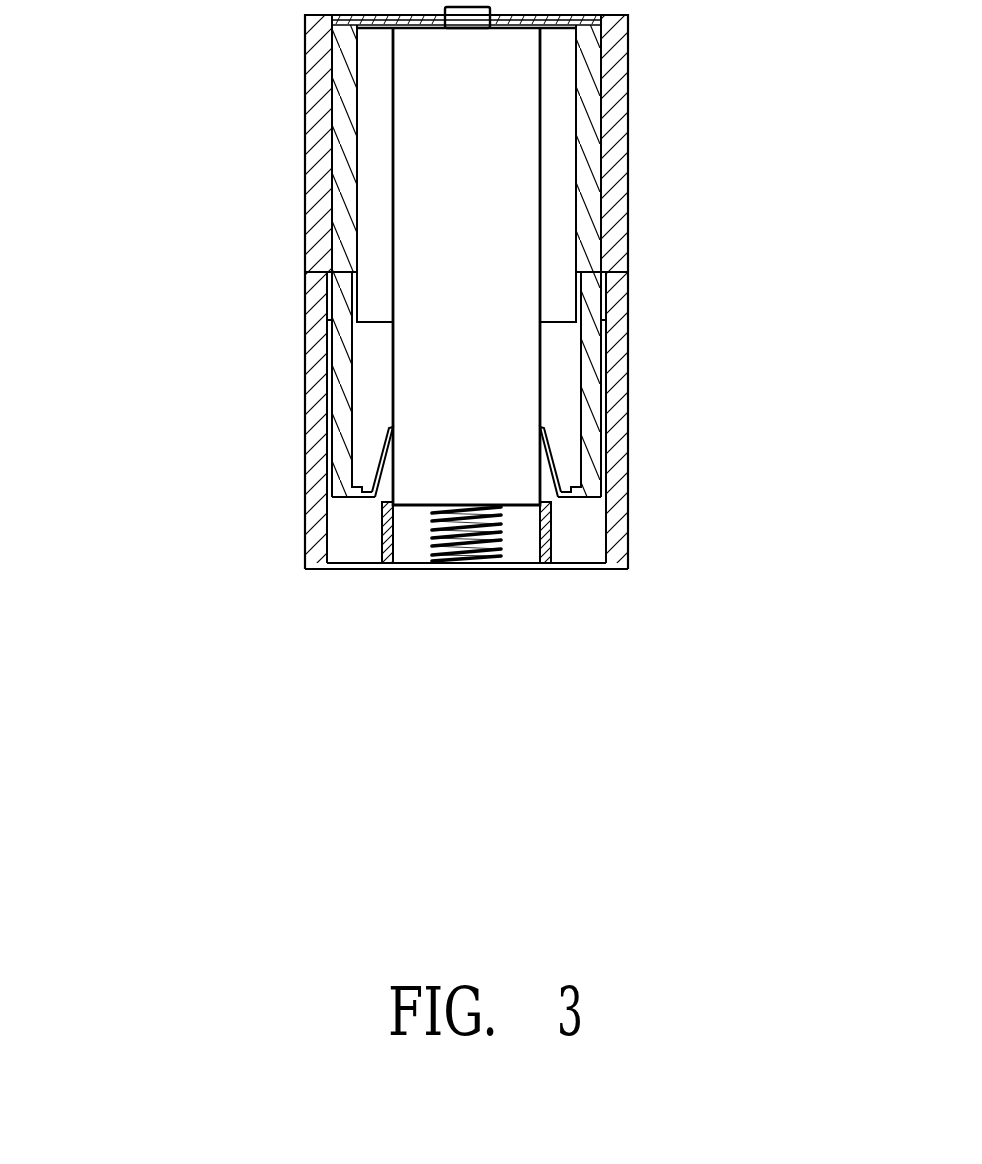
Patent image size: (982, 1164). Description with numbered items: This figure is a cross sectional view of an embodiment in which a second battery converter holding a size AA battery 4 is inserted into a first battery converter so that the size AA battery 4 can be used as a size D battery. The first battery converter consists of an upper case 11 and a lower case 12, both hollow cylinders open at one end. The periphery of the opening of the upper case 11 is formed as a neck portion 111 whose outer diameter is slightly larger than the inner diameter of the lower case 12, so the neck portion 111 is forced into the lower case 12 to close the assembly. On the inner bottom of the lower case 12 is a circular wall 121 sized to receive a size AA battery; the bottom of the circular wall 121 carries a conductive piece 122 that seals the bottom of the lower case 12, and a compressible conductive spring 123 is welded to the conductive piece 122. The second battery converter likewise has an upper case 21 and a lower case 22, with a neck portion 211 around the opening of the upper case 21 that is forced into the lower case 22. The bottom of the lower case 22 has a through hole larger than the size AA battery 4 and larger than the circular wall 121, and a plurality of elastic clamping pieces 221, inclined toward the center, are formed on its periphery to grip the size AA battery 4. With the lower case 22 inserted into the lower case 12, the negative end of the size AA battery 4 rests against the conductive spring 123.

The size AA battery 4 is at (447, 222).
The upper case 11 is at (613, 149).
The neck portion 111 is at (327, 289).
The lower case 12 is at (619, 552).
The circular wall 121 is at (553, 543).
The conductive piece 122 is at (518, 566).
The conductive spring 123 is at (433, 552).
The upper case 21 is at (592, 222).
The neck portion 211 is at (606, 310).
The lower case 22 is at (595, 397).
The elastic clamping pieces 221 is at (373, 475).